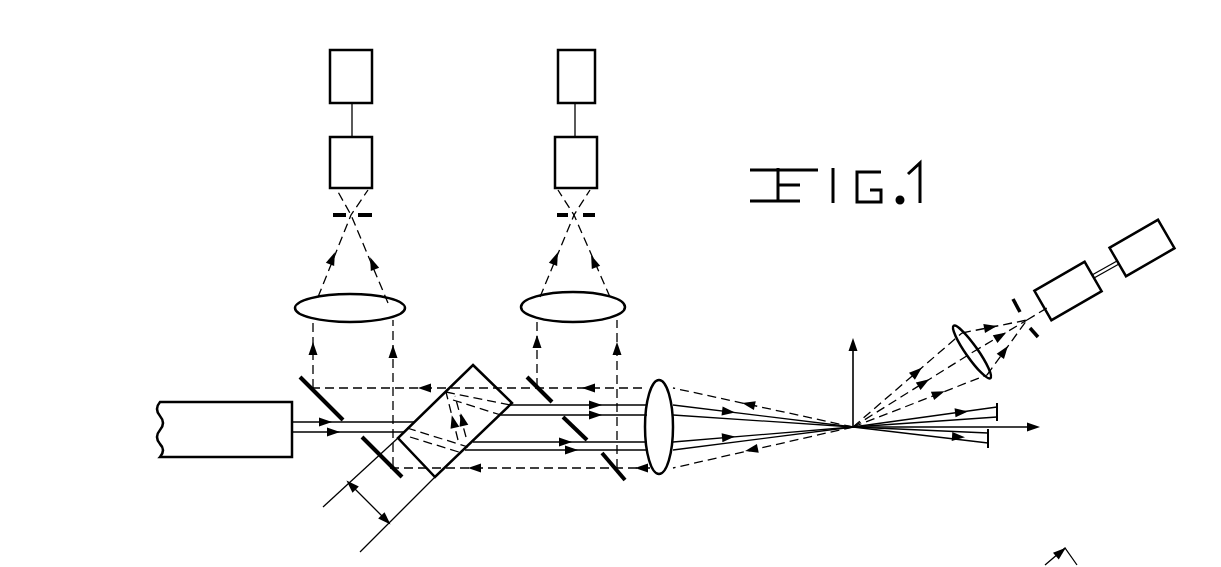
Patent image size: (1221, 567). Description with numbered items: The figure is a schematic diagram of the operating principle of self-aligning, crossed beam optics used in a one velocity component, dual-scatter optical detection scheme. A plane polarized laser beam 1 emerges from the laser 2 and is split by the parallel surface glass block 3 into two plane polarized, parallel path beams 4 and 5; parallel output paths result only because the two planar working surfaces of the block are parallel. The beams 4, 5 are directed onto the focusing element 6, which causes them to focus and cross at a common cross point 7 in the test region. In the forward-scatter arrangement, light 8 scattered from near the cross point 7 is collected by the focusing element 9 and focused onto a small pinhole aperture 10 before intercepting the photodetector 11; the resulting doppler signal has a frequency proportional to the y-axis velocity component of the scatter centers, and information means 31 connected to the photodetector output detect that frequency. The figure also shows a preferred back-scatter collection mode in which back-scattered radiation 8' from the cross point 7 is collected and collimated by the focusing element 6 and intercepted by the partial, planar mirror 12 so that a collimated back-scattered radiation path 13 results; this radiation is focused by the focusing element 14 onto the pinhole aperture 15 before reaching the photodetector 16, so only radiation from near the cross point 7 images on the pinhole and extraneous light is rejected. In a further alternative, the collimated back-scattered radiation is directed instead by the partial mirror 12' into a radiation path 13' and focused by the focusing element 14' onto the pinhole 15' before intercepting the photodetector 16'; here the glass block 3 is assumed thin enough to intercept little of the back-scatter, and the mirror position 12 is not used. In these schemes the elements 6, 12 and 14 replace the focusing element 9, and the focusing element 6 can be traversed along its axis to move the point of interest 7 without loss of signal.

The laser beam 1 is at (313, 435).
The laser 2 is at (247, 458).
The parallel surface glass block 3 is at (453, 383).
The beam 4 is at (523, 400).
The beam 5 is at (518, 453).
The focusing element 6 is at (665, 380).
The cross point 7 is at (853, 432).
The scattered light 8 is at (920, 378).
The back-scattered radiation 8' is at (763, 416).
The focusing element 9 is at (952, 338).
The pinhole aperture 10 is at (1035, 331).
The photodetector 11 is at (1083, 308).
The partial mirror 12 is at (598, 469).
The partial mirror 12' is at (368, 450).
The collimated back-scattered radiation path 13 is at (605, 394).
The radiation path 13' is at (378, 391).
The focusing element 14 is at (601, 256).
The focusing element 14' is at (377, 256).
The pinhole aperture 15 is at (608, 208).
The pinhole 15' is at (382, 204).
The photodetector 16 is at (605, 145).
The photodetector 16' is at (377, 145).
The information means 31 is at (372, 82).